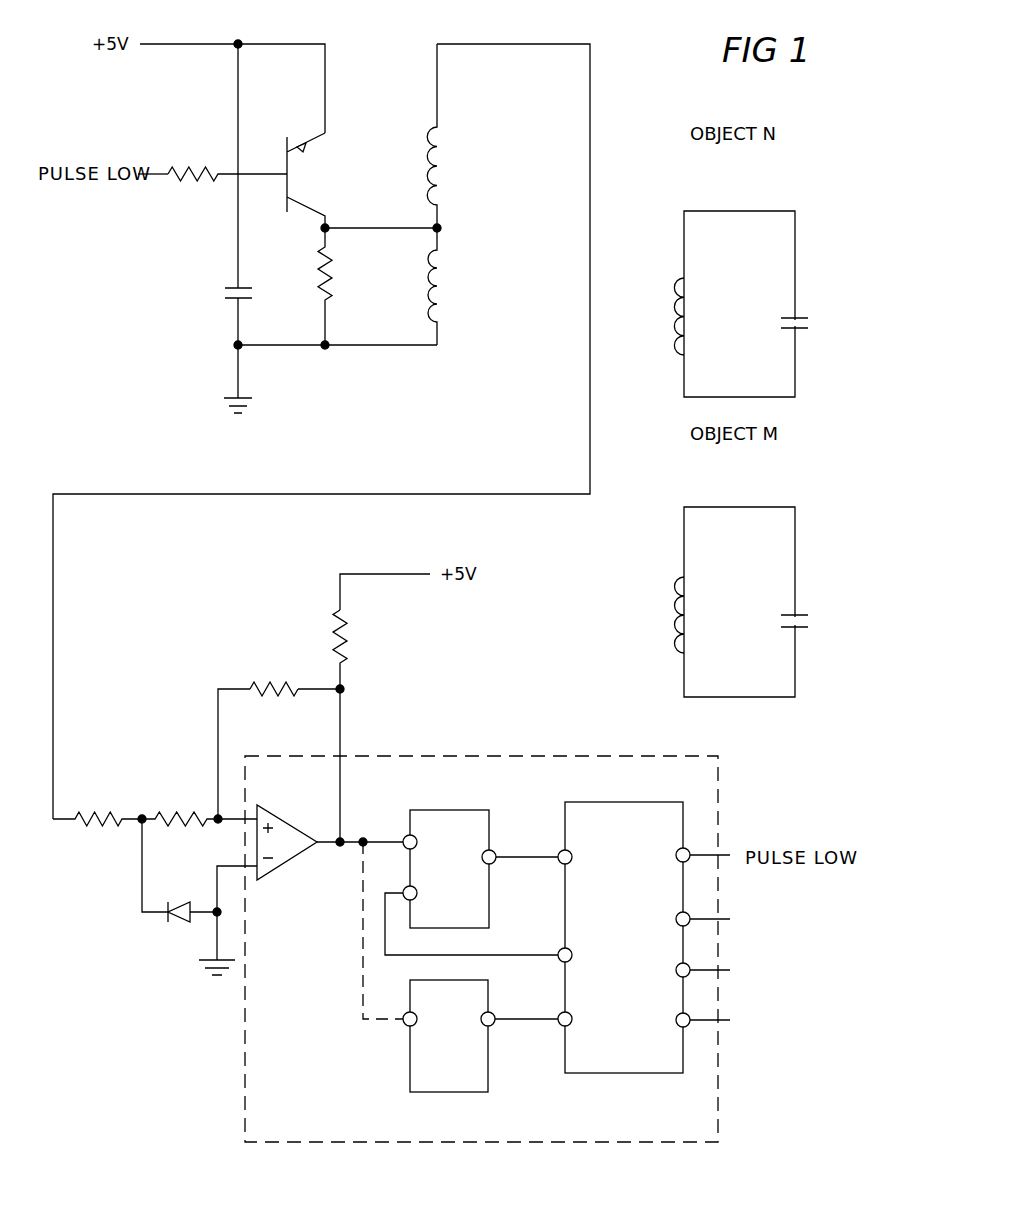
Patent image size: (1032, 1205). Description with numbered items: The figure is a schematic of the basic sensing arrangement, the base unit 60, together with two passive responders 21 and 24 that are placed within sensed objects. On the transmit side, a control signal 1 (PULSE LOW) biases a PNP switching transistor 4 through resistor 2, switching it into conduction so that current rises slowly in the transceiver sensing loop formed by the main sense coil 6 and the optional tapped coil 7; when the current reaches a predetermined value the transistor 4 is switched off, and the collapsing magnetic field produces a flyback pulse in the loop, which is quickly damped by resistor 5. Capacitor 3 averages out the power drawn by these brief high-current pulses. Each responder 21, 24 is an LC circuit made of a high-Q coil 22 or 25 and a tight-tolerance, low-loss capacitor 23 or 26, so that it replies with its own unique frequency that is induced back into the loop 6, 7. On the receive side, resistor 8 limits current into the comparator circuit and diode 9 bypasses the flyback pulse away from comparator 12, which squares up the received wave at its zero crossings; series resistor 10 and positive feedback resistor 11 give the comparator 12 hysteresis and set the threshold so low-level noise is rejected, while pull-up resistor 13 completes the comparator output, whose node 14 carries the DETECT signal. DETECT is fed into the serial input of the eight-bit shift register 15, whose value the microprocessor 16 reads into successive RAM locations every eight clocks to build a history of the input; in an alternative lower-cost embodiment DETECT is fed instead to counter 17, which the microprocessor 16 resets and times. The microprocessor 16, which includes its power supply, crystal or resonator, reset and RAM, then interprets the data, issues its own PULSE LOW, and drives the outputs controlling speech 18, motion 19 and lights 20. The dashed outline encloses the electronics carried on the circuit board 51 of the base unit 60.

The signal 1 is at (137, 182).
The resistor 2 is at (204, 158).
The capacitor 3 is at (255, 292).
The transistor 4 is at (305, 161).
The resistor 5 is at (335, 296).
The main sense coil 6 is at (440, 262).
The optional tapped coil 7 is at (445, 135).
The resistor 8 is at (112, 832).
The diode 9 is at (176, 930).
The series resistor 10 is at (200, 832).
The positive feedback resistor 11 is at (287, 698).
The comparator 12 is at (283, 820).
The pull up resistor 13 is at (350, 630).
The detect output node 14 is at (354, 856).
The shift register 15 is at (463, 809).
The microprocessor 16 is at (652, 1073).
The counter 17 is at (473, 1092).
The speech control output 18 is at (838, 913).
The motion control output 19 is at (838, 962).
The lights control output 20 is at (838, 1000).
The passive responder 21 is at (749, 210).
The coil 22 is at (692, 287).
The capacitor 23 is at (810, 320).
The passive responder 24 is at (749, 506).
The coil 25 is at (690, 585).
The capacitor 26 is at (808, 620).
The circuit board 51 is at (718, 1094).
The base unit 60 is at (536, 656).